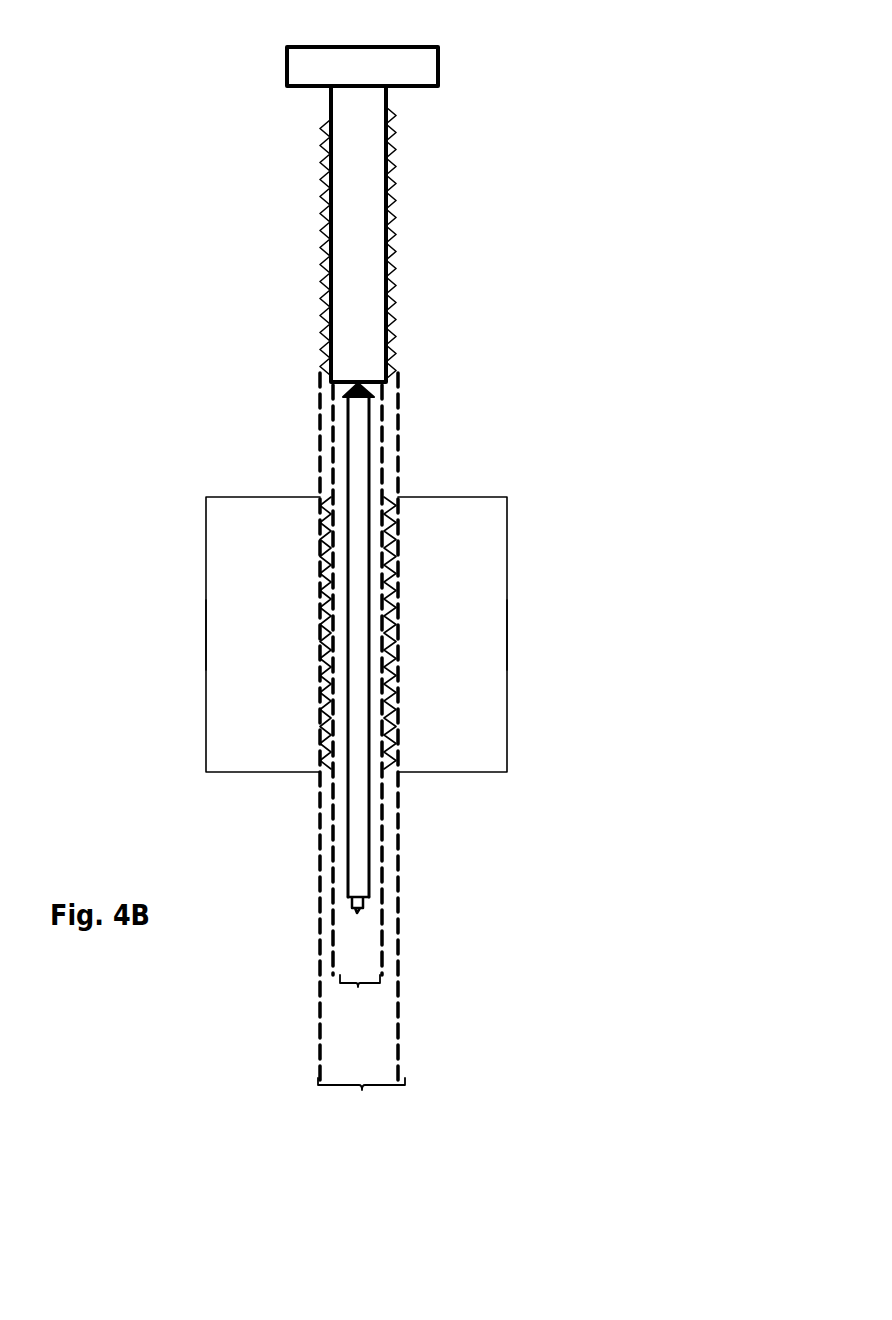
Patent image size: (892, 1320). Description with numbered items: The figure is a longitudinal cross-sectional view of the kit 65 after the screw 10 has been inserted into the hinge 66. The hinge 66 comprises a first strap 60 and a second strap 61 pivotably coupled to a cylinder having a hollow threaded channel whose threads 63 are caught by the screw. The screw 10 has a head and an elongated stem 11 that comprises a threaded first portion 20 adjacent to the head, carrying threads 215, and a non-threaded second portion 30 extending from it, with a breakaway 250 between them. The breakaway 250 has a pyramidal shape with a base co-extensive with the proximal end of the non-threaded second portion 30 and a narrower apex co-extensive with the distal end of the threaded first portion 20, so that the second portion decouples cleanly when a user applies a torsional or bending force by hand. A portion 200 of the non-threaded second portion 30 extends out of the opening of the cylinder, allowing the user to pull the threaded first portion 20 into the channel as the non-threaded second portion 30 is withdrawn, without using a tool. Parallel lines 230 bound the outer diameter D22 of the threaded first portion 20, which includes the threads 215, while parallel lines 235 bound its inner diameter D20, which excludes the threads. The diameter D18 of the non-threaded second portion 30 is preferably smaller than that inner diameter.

The kit 65 is at (118, 147).
The screw 10 is at (457, 170).
The threaded first portion 20 is at (306, 236).
The elongated stem 11 is at (357, 212).
The threads 215 is at (392, 275).
The breakaway 250 is at (365, 382).
The parallel lines 230 is at (318, 433).
The non-threaded second portion 30 is at (307, 486).
The hinge 66 is at (168, 635).
The second strap 61 is at (290, 682).
The first strap 60 is at (478, 682).
The parallel lines 235 is at (320, 590).
The threads 63 is at (318, 730).
The portion 200 is at (358, 862).
The pilot diameter D18 is at (358, 913).
The shank diameter D20 is at (358, 990).
The outer diameter D22 is at (362, 1093).